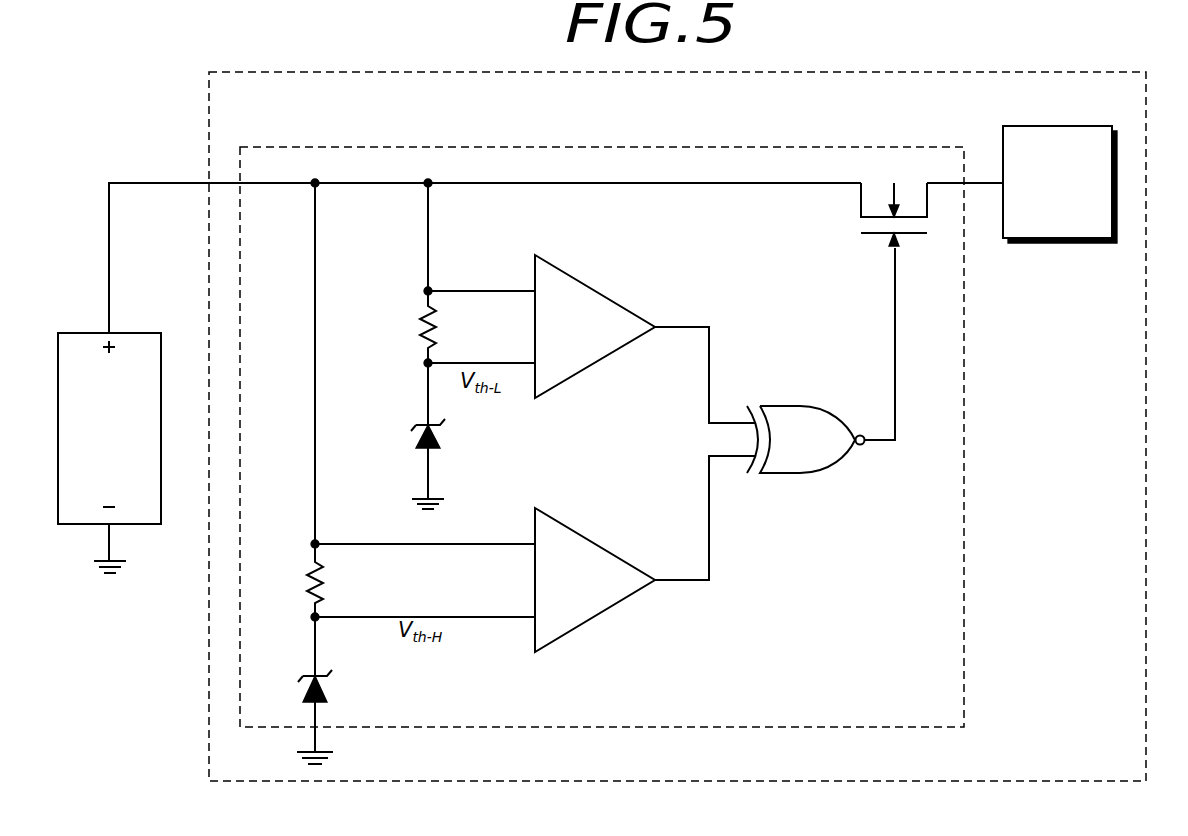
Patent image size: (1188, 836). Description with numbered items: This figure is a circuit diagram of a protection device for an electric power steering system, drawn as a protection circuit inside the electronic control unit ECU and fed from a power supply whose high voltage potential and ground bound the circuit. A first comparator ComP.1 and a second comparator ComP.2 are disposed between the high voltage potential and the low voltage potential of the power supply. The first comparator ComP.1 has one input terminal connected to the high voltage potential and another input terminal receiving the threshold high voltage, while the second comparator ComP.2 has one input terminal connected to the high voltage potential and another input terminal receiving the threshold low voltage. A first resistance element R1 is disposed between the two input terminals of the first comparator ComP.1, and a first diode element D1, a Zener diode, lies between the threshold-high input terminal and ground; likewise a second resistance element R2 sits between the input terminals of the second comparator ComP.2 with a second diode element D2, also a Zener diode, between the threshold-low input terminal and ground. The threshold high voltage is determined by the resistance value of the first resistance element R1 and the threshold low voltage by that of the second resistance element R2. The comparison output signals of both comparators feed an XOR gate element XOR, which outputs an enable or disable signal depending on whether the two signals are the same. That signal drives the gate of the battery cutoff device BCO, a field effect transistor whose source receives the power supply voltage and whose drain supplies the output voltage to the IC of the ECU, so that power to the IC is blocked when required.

The electronic control unit ECU is at (677, 412).
The first resistance element R1 is at (300, 580).
The second resistance element R2 is at (413, 327).
The first diode element D1 is at (299, 690).
The second diode element D2 is at (412, 436).
The first comparator ComP.1 is at (597, 580).
The second comparator ComP.2 is at (597, 326).
The XOR gate element XOR is at (806, 439).
The battery cutoff device BCO is at (903, 225).
The element IC is at (1060, 184).